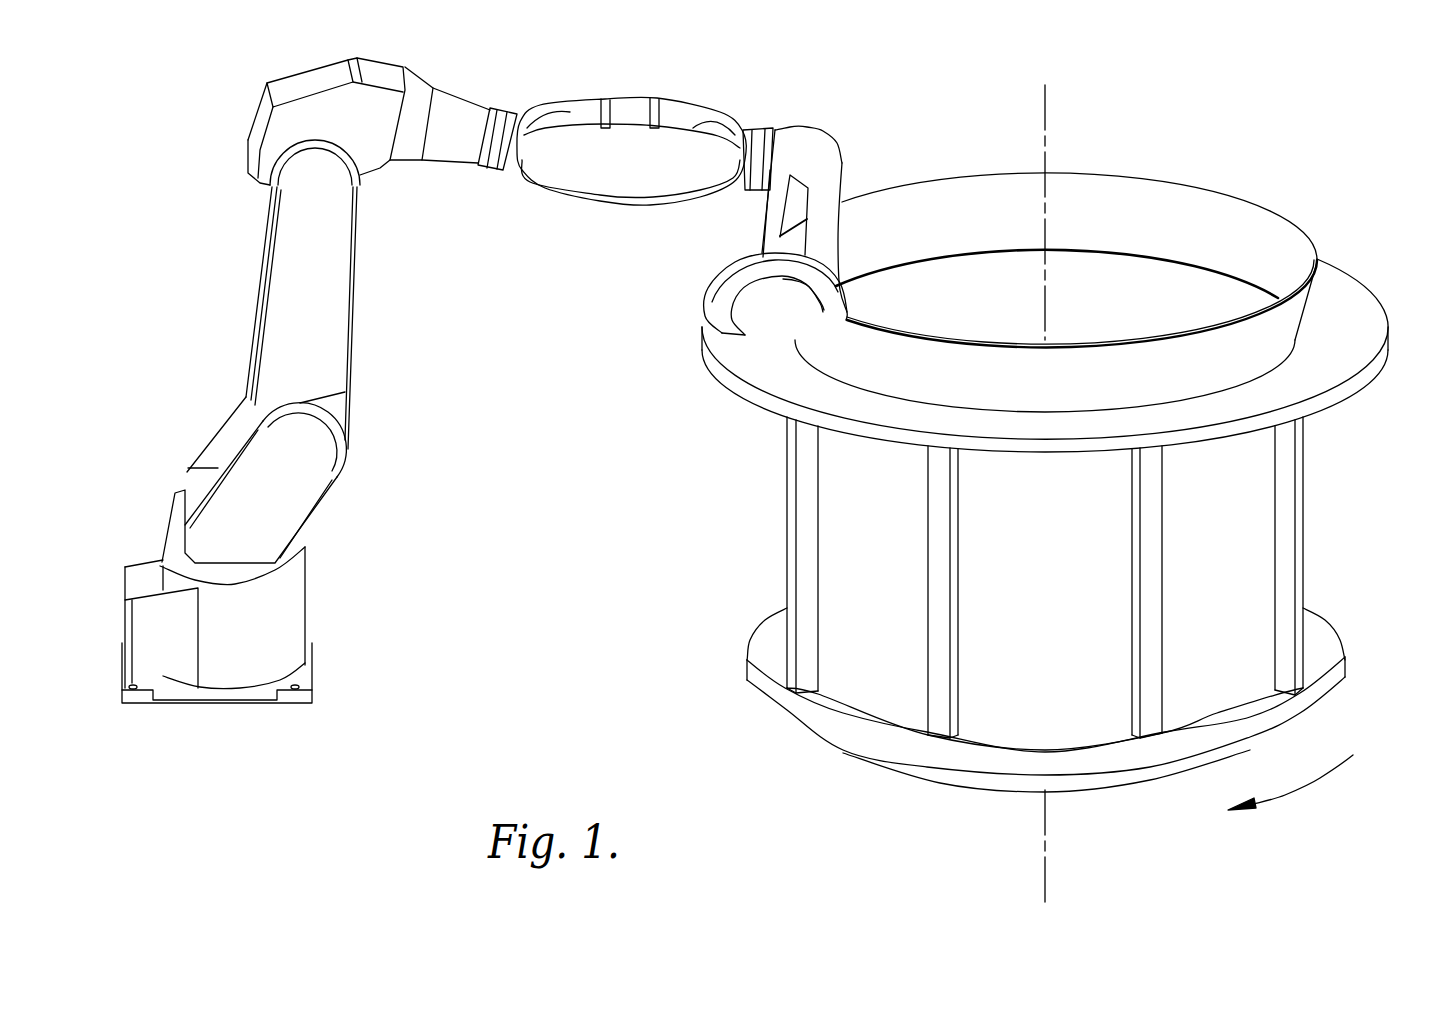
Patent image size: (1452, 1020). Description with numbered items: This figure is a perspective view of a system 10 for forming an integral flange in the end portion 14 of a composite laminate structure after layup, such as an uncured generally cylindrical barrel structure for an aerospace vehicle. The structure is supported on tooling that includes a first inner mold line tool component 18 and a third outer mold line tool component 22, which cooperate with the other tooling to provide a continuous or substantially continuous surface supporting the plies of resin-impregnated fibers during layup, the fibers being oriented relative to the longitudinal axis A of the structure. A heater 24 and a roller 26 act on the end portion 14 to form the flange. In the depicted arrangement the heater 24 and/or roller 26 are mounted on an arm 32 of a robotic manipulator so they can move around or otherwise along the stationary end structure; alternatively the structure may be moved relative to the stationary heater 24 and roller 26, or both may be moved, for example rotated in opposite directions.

The system 10 is at (1075, 475).
The end portion 14 is at (1214, 203).
The first inner mold line (IML) tool component 18 is at (1232, 300).
The third outer mold line (OML) tool component 22 is at (1362, 310).
The heater 24 is at (740, 282).
The roller 26 is at (806, 290).
The arm 32 is at (484, 369).